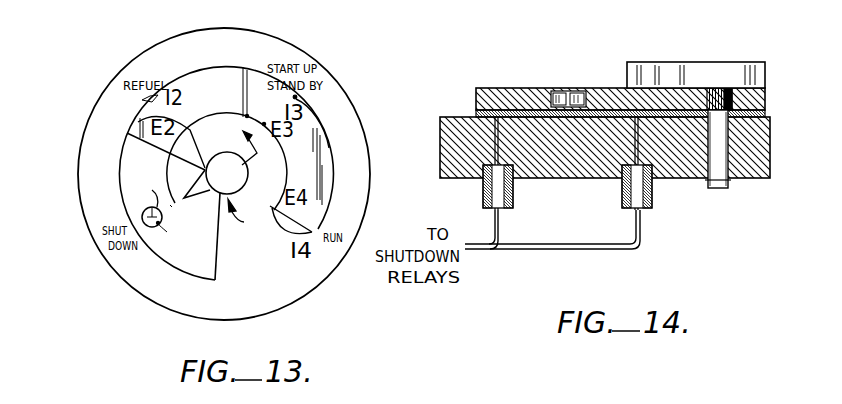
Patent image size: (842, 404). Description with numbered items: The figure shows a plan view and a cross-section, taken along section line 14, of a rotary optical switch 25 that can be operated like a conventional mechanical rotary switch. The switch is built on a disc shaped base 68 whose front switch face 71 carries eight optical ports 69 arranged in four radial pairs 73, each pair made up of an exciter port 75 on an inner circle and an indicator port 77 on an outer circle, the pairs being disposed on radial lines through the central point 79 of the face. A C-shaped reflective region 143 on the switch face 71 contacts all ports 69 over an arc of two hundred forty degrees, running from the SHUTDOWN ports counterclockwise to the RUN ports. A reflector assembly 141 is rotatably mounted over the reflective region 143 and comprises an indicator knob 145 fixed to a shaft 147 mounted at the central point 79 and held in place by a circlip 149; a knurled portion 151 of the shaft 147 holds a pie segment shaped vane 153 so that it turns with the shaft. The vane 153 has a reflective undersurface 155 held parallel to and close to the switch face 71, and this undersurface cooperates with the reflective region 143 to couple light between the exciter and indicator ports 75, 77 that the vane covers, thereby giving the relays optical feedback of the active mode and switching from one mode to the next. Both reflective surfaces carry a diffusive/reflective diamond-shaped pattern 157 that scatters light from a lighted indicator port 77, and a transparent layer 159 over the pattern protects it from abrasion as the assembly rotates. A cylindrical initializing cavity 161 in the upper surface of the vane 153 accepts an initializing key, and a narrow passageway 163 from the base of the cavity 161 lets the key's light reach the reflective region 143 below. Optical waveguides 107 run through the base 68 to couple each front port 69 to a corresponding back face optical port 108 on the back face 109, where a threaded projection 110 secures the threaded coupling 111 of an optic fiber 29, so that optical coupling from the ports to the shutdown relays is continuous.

In FIG. 13, the section line 14 is at (70, 251).
In FIG. 13, the optical switch 25 is at (292, 34).
In FIG. 14, the optical switch 25 is at (721, 217).
In FIG. 14, the optic fibers 29 is at (552, 232).
In FIG. 14, the switch base 68 is at (757, 157).
In FIG. 13, the optical ports 69 is at (142, 100).
In FIG. 13, the switch face 71 is at (252, 311).
In FIG. 14, the switch face 71 is at (450, 118).
In FIG. 13, the port pairs 73 is at (287, 234).
In FIG. 13, the exciter port 75 is at (185, 130).
In FIG. 14, the exciter port 75 is at (636, 120).
In FIG. 13, the indicator port 77 is at (296, 99).
In FIG. 14, the indicator port 77 is at (490, 120).
In FIG. 13, the central point 79 is at (207, 172).
In FIG. 14, the optical waveguides 107 is at (610, 180).
In FIG. 14, the back face optical ports 108 is at (515, 204).
In FIG. 14, the back face 109 is at (757, 181).
In FIG. 14, the threaded projection 110 is at (485, 190).
In FIG. 14, the threaded coupling 111 is at (483, 200).
In FIG. 13, the reflector assembly 141 is at (249, 216).
In FIG. 14, the reflector assembly 141 is at (517, 84).
In FIG. 13, the reflective region 143 is at (330, 147).
In FIG. 14, the reflective region 143 is at (614, 116).
In FIG. 13, the indicator knob 145 is at (213, 173).
In FIG. 14, the indicator knob 145 is at (712, 70).
In FIG. 14, the shaft 147 is at (720, 135).
In FIG. 14, the circlip 149 is at (732, 188).
In FIG. 14, the knurled portion 151 is at (733, 98).
In FIG. 14, the vane 153 is at (522, 88).
In FIG. 14, the reflective undersurface 155 is at (684, 108).
In FIG. 14, the diamond-shaped pattern 157 is at (478, 112).
In FIG. 14, the transparent layer 159 is at (512, 110).
In FIG. 13, the initializing cavity 161 is at (164, 226).
In FIG. 14, the initializing cavity 161 is at (560, 71).
In FIG. 13, the passageway 163 is at (141, 192).
In FIG. 14, the passageway 163 is at (566, 92).